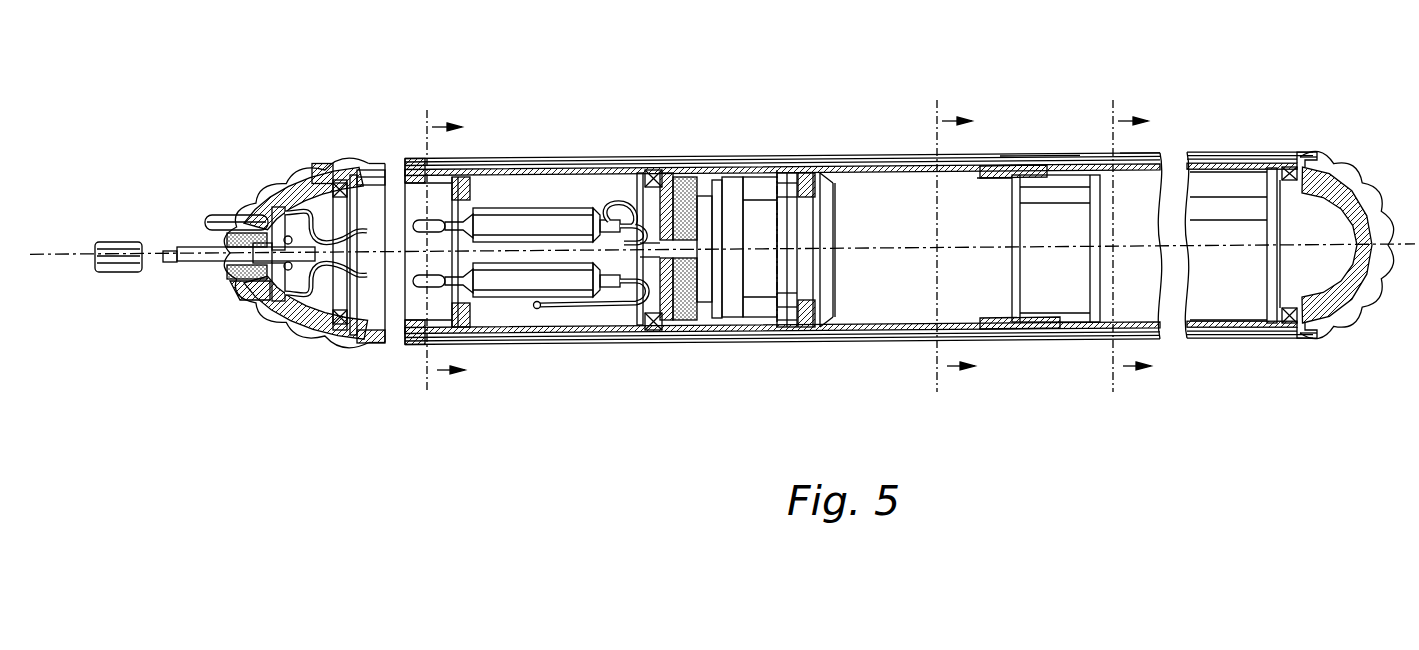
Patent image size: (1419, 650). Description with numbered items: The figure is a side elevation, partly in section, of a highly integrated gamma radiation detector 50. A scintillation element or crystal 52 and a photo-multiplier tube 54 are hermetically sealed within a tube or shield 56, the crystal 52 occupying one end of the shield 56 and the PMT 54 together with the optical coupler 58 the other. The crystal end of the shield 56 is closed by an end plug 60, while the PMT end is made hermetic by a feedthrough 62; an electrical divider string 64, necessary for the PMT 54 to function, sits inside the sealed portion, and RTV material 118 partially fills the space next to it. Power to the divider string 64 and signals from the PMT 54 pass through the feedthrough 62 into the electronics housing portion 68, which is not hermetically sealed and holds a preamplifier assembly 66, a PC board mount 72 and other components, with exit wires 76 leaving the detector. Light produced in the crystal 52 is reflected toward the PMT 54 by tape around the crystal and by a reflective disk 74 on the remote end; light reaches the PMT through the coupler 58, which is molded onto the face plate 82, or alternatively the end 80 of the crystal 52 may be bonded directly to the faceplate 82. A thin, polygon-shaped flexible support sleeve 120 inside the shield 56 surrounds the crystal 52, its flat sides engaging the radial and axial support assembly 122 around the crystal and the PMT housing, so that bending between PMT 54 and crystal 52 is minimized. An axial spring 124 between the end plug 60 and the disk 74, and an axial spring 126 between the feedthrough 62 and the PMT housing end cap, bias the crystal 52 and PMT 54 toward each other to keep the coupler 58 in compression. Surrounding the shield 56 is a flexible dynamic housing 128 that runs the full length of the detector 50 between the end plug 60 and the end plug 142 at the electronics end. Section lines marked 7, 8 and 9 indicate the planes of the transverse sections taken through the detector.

The radiation detector 50 is at (784, 118).
The scintillation crystal 52 is at (1224, 190).
The photo-multiplier tube 54 is at (865, 205).
The shield 56 is at (1035, 157).
The optical coupler 58 is at (1015, 278).
The end plug 60 is at (1337, 172).
The feedthrough 62 is at (595, 198).
The electrical divider string 64 is at (730, 200).
The preamplifier assembly 66 is at (366, 245).
The electronics housing portion 68 is at (488, 345).
The PC board mount 72 is at (372, 344).
The reflective disk 74 is at (1275, 283).
The exit wires 76 is at (175, 250).
The crystal end 80 is at (1018, 303).
The face plate 82 is at (1017, 236).
The RTV material 118 is at (718, 345).
The flexible support sleeve 120 is at (990, 158).
The radial and axial support assembly 122 is at (1228, 345).
The axial spring 124 is at (1288, 176).
The axial spring 126 is at (657, 345).
The flexible dynamic housing 128 is at (1150, 145).
The end plug 142 is at (300, 182).
The section line 7- 7 is at (1117, 246).
The section line 8- 8 is at (433, 251).
The section line 9- 9 is at (943, 246).